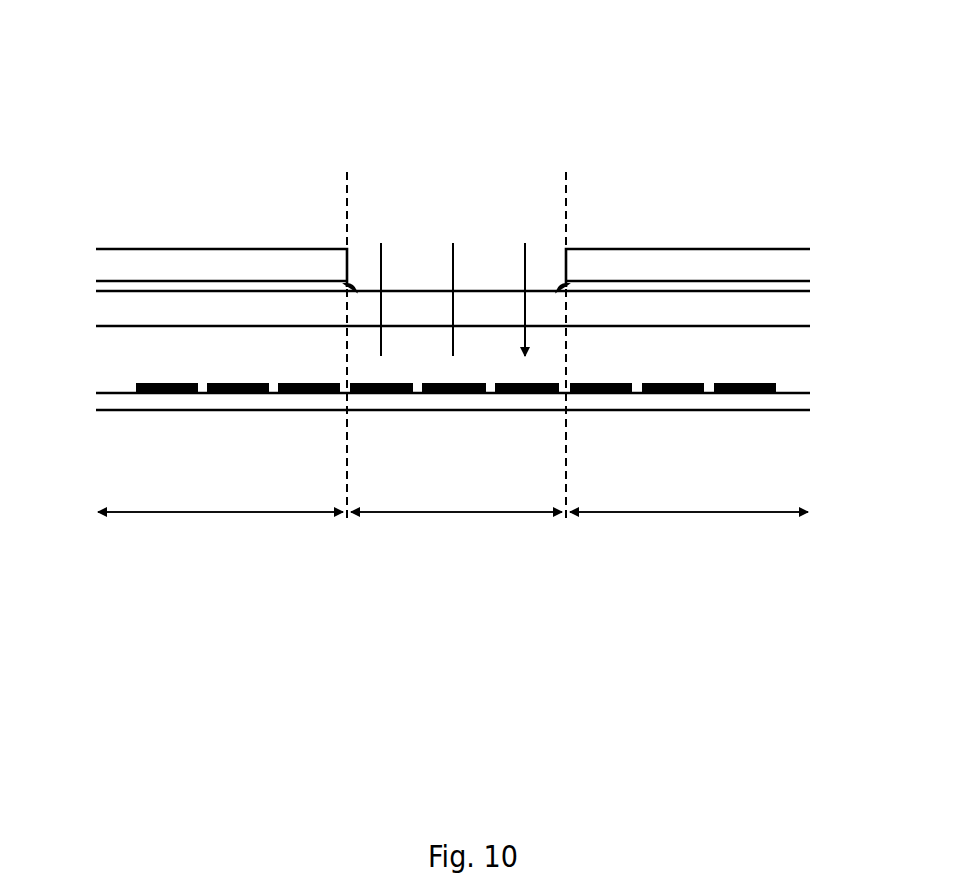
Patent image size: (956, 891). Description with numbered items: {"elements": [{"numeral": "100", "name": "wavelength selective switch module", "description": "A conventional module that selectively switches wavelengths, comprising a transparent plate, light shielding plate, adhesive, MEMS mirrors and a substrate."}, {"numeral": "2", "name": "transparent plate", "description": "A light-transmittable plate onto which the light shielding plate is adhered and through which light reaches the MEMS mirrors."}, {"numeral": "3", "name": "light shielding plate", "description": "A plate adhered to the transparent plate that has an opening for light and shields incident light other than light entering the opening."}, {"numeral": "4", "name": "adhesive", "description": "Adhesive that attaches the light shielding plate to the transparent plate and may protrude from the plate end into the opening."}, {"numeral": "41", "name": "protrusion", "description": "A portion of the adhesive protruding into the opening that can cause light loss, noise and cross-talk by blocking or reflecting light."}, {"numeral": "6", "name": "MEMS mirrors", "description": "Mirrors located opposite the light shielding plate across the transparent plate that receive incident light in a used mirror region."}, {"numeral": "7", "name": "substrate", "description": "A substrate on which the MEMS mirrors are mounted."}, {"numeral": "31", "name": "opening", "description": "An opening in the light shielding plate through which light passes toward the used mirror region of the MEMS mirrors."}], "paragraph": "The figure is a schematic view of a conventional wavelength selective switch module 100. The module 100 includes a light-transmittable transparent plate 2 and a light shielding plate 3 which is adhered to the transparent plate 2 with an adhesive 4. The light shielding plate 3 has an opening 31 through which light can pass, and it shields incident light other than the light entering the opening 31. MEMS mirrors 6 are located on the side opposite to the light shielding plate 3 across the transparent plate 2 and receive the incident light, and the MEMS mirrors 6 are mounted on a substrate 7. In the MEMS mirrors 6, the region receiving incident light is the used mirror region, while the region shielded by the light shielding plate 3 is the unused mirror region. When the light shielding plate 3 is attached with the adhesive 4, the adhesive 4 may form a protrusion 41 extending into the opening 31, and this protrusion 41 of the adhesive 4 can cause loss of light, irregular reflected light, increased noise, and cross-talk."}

The optical device 100 is at (220, 108).
The substrate 2 is at (113, 310).
The cover layer 3 is at (163, 260).
The spacer layer 4 is at (97, 288).
The spacer end protrusion 41 is at (353, 286).
The mirror elements 6 is at (281, 383).
The base layer 7 is at (106, 402).
The incident light 31 is at (503, 258).